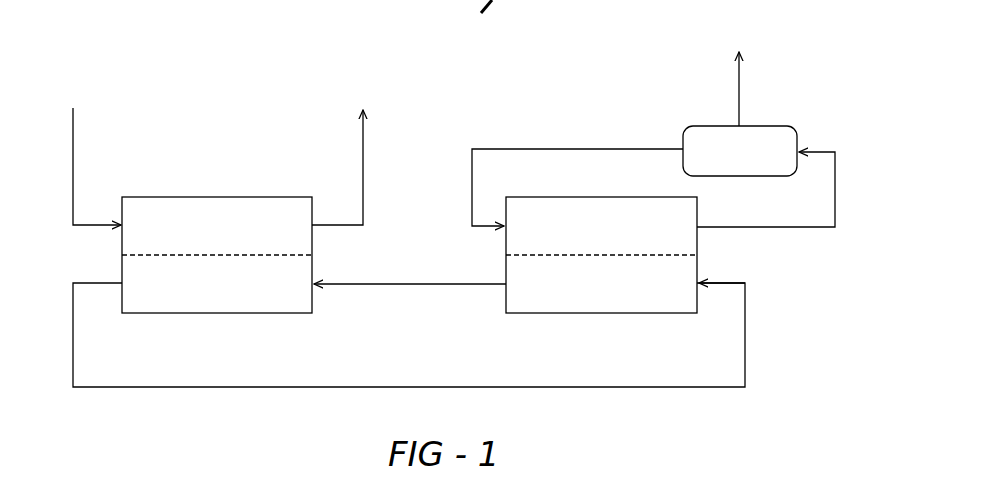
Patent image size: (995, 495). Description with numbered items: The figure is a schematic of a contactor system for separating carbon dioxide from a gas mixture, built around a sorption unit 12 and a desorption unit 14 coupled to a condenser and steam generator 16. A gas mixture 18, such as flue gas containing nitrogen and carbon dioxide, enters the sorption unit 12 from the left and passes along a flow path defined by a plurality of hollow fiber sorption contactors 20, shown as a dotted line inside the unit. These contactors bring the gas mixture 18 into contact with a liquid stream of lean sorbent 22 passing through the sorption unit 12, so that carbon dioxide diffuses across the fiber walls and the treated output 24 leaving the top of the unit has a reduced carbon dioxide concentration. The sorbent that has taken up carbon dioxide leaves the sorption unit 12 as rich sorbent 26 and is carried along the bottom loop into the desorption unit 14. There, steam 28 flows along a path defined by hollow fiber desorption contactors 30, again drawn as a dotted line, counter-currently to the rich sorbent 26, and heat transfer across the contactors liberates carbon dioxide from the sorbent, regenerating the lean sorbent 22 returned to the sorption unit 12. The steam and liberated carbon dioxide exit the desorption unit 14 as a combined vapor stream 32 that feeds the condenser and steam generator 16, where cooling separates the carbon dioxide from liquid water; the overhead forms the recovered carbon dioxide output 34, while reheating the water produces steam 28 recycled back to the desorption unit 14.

The sorption unit 12 is at (182, 197).
The desorption unit 14 is at (573, 197).
The condenser and steam generator 16 is at (767, 126).
The gas mixture 18 is at (73, 175).
The hollow fiber sorption contactors 20 is at (197, 255).
The lean sorbent 22 is at (368, 284).
The treated output 24 is at (363, 198).
The rich sorbent 26 is at (355, 387).
The steam 28 is at (500, 149).
The hollow fiber desorption contactors 30 is at (593, 255).
The combined vapor stream 32 is at (780, 227).
The recovered carbon dioxide output 34 is at (739, 98).